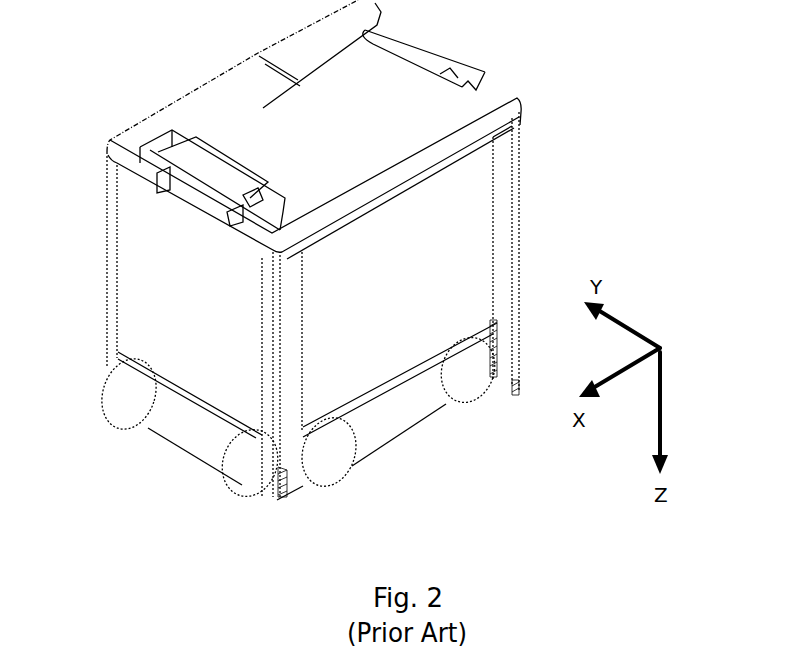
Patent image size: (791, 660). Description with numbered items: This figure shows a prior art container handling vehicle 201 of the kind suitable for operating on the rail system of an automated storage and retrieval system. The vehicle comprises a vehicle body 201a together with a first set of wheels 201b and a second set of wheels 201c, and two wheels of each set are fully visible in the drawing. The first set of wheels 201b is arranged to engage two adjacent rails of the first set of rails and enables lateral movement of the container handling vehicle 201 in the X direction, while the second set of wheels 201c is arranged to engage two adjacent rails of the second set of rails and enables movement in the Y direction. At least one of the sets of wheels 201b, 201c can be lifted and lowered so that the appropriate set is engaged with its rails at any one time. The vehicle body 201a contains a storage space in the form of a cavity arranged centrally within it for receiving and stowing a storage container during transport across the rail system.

The container handling vehicle 201 is at (572, 218).
The vehicle body 201a is at (205, 103).
The first set of wheels 201b is at (447, 436).
The second set of wheels 201c is at (153, 452).